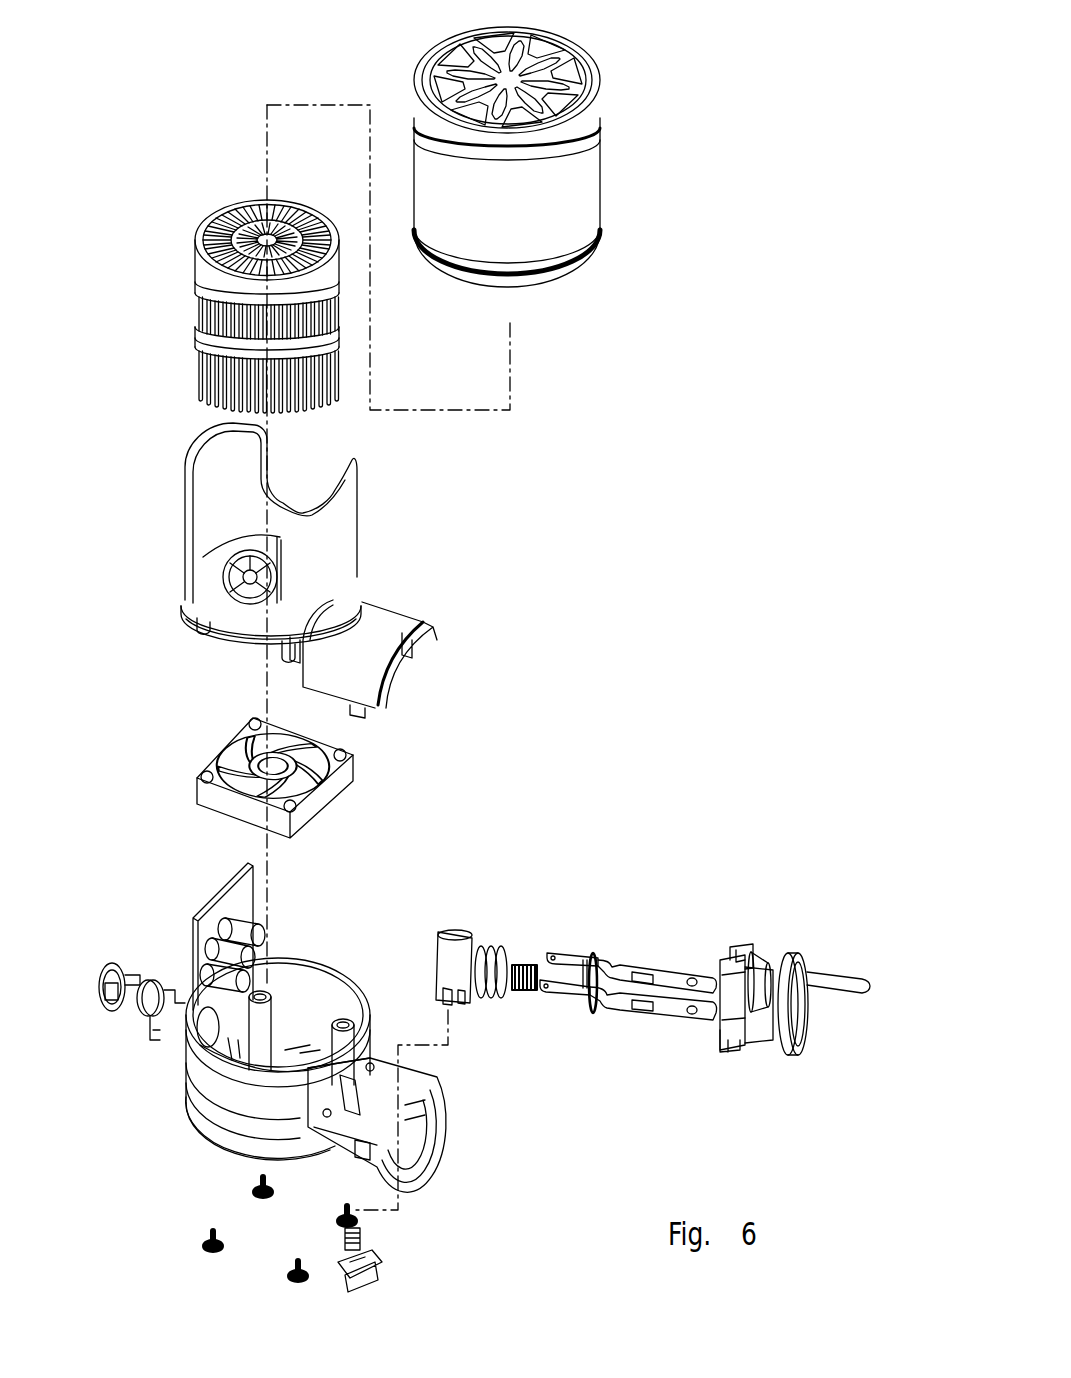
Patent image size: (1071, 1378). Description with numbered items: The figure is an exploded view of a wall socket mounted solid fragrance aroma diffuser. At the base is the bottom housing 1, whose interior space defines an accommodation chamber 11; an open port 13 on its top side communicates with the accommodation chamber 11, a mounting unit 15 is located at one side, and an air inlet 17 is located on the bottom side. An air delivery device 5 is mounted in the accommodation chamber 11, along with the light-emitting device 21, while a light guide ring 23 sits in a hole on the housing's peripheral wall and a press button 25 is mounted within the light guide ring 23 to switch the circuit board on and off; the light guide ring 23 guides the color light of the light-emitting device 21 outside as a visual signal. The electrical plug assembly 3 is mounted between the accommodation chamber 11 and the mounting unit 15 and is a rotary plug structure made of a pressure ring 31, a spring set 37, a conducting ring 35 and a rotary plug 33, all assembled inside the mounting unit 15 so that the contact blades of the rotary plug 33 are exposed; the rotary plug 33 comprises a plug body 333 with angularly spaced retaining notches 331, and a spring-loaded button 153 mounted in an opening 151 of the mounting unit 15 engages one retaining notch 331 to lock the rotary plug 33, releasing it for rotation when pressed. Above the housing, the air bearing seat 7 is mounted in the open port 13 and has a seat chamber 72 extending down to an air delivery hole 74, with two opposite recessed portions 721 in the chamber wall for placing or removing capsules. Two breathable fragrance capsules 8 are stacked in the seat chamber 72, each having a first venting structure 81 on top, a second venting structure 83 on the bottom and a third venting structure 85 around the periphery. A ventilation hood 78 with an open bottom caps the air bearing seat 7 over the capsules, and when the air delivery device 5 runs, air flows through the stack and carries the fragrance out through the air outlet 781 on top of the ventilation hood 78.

The bottom housing 1 is at (225, 1058).
The accommodation chamber 11 is at (293, 997).
The open port 13 is at (190, 1050).
The mounting unit 15 is at (412, 1067).
The opening 151 is at (437, 1093).
The spring-loaded button 153 is at (360, 1250).
The air inlet 17 is at (203, 1160).
The light-emitting device 21 is at (227, 880).
The light guide ring 23 is at (110, 960).
The press button 25 is at (157, 980).
The electrical plug assembly 3 is at (768, 835).
The pressure ring 31 is at (463, 945).
The rotary plug 33 is at (843, 945).
The retaining notches 331 is at (730, 1033).
The plug body 333 is at (748, 1013).
The conducting ring 35 is at (575, 962).
The spring set 37 is at (528, 960).
The air delivery device 5 is at (207, 762).
The air bearing seat 7 is at (251, 570).
The seat chamber 72 is at (222, 508).
The recessed portions 721 is at (196, 573).
The air delivery hole 74 is at (233, 607).
The ventilation hood 78 is at (583, 183).
The air outlet 781 is at (508, 80).
The breathable fragrance capsules 8 is at (213, 271).
The first venting structure 81 is at (222, 203).
The second venting structure 83 is at (215, 412).
The third venting structure 85 is at (212, 293).